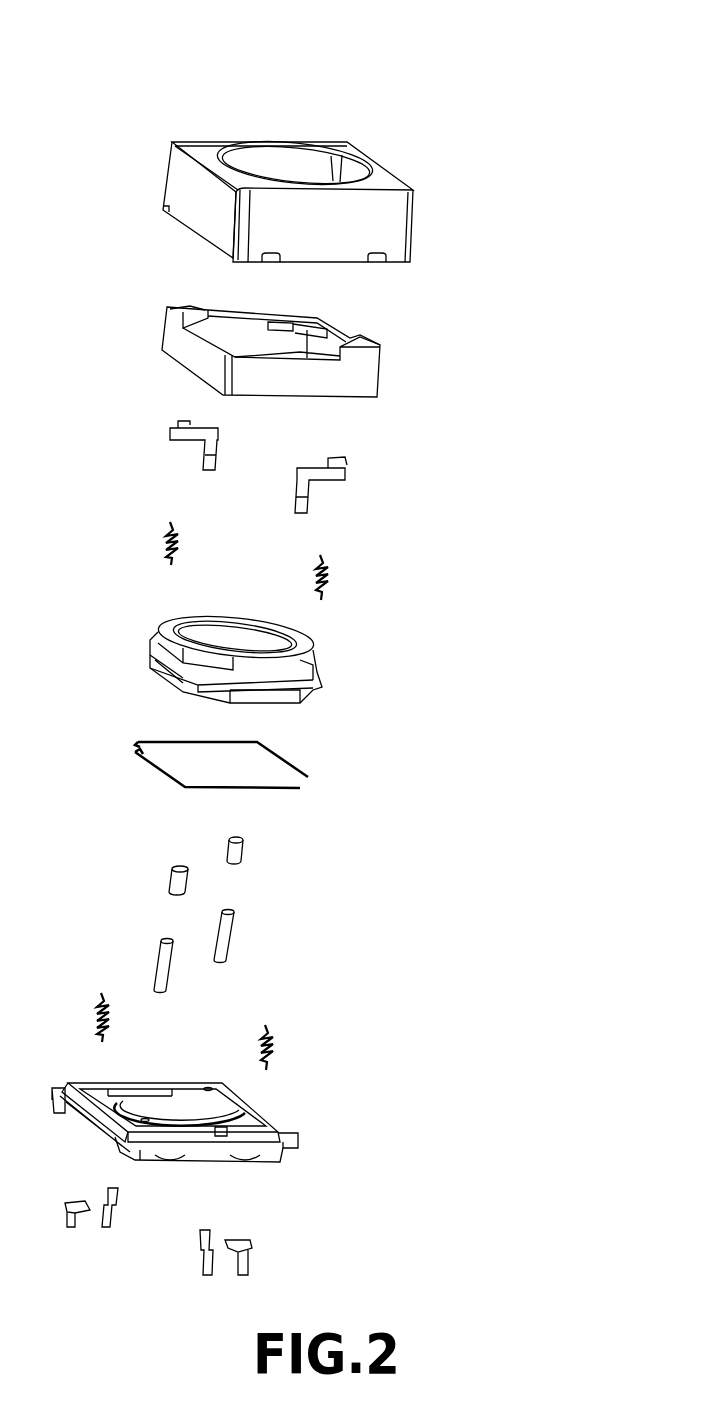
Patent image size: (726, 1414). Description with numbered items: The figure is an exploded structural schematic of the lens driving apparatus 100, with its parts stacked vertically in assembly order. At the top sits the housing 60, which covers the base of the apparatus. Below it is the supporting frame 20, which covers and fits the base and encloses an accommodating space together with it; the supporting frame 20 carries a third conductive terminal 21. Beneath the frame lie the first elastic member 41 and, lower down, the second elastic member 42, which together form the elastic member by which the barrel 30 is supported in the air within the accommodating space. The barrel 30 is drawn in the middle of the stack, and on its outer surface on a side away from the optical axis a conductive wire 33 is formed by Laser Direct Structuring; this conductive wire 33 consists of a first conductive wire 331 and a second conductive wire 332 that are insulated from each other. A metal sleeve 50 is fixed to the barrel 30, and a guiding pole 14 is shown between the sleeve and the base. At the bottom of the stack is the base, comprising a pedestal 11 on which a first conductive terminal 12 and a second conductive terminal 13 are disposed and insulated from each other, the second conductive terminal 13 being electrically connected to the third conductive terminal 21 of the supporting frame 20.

The lens driving apparatus 100 is at (275, 638).
The housing 60 is at (395, 220).
The supporting frame 20 is at (362, 382).
The third conductive terminal 21 is at (345, 468).
The first elastic member 41 is at (328, 566).
The barrel 30 is at (305, 660).
The conductive wire 33 is at (276, 770).
The second conductive wire 332 is at (305, 770).
The first conductive wire 331 is at (300, 788).
The metal sleeve 50 is at (245, 853).
The guiding pole 14 is at (232, 942).
The second elastic member 42 is at (270, 1046).
The pedestal 11 is at (278, 1133).
The second conductive terminal 13 is at (210, 1238).
The first conductive terminal 12 is at (250, 1243).